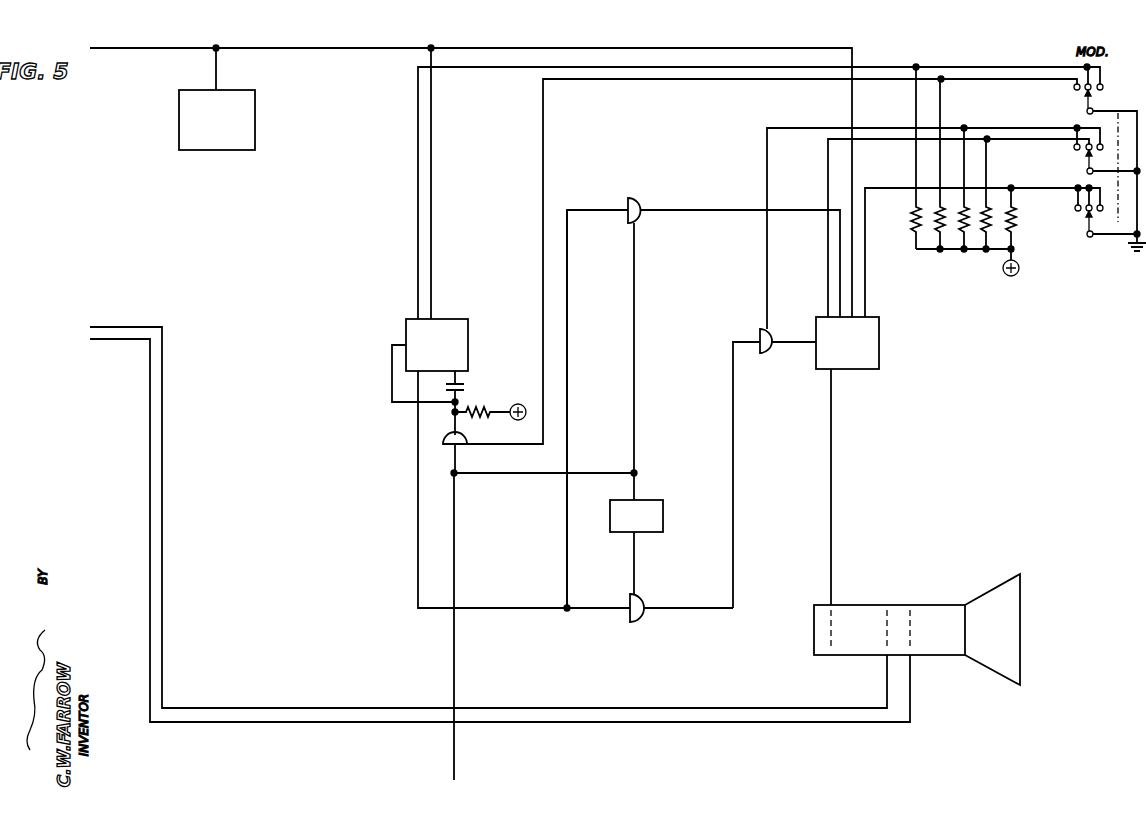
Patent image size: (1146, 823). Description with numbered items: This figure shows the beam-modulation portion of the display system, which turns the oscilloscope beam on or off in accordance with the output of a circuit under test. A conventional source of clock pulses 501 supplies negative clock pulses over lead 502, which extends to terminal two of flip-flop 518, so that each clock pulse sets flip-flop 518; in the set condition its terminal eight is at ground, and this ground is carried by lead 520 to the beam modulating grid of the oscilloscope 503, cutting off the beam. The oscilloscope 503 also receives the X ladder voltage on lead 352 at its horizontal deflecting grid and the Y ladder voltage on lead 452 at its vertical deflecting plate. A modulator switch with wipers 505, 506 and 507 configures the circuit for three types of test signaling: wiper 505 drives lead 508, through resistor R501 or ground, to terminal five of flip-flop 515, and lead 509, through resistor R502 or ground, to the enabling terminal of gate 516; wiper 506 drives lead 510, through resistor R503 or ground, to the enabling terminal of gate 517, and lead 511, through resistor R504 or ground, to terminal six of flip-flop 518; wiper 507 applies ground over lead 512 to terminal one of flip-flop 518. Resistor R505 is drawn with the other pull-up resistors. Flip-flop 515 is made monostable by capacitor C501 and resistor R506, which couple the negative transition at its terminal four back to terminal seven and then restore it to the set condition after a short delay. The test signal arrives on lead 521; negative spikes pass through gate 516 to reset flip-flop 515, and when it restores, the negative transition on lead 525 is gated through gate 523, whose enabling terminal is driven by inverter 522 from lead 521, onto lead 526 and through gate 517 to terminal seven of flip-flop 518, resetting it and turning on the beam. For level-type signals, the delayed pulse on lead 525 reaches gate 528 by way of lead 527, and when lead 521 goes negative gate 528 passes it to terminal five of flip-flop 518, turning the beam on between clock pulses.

The source of clock pulses 501 is at (255, 117).
The lead 502 is at (111, 44).
The oscilloscope 503 is at (1020, 628).
The wiper 505 is at (1075, 111).
The wiper 506 is at (1075, 168).
The wiper 507 is at (1075, 226).
The lead 508 is at (876, 66).
The lead 509 is at (878, 82).
The lead 510 is at (876, 127).
The lead 511 is at (878, 141).
The lead 512 is at (876, 187).
The resistor R501 is at (911, 220).
The resistor R502 is at (930, 232).
The resistor R503 is at (956, 236).
The resistor R504 is at (978, 238).
The resistor R505 is at (1003, 240).
The resistor R506 is at (492, 413).
The capacitor C501 is at (466, 392).
The flip-flop 515 is at (468, 346).
The gate 516 is at (459, 447).
The gate 517 is at (760, 333).
The flip-flop 518 is at (879, 343).
The lead 520 is at (832, 518).
The lead 521 is at (455, 518).
The inverter 522 is at (663, 517).
The gate 523 is at (635, 623).
The lead 525 is at (417, 518).
The lead 526 is at (734, 518).
The lead 527 is at (566, 518).
The gate 528 is at (630, 198).
The lead 352 is at (149, 518).
The lead 452 is at (163, 518).